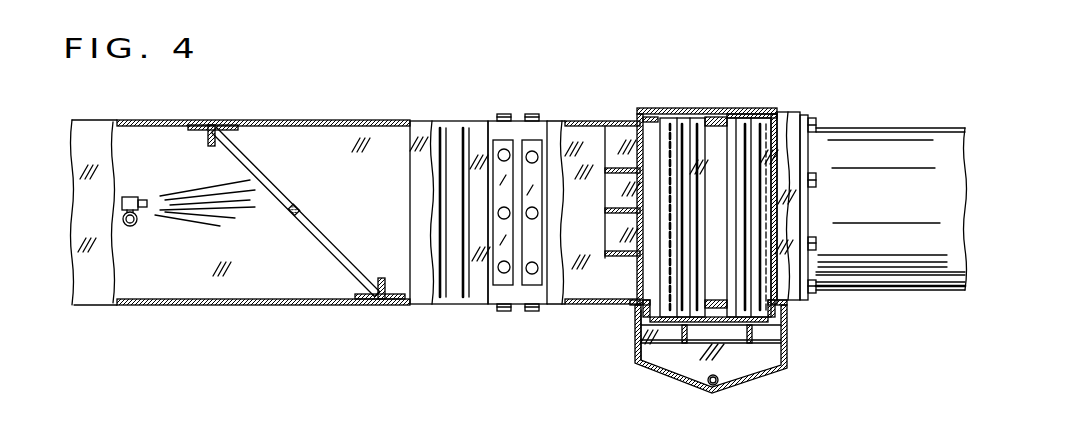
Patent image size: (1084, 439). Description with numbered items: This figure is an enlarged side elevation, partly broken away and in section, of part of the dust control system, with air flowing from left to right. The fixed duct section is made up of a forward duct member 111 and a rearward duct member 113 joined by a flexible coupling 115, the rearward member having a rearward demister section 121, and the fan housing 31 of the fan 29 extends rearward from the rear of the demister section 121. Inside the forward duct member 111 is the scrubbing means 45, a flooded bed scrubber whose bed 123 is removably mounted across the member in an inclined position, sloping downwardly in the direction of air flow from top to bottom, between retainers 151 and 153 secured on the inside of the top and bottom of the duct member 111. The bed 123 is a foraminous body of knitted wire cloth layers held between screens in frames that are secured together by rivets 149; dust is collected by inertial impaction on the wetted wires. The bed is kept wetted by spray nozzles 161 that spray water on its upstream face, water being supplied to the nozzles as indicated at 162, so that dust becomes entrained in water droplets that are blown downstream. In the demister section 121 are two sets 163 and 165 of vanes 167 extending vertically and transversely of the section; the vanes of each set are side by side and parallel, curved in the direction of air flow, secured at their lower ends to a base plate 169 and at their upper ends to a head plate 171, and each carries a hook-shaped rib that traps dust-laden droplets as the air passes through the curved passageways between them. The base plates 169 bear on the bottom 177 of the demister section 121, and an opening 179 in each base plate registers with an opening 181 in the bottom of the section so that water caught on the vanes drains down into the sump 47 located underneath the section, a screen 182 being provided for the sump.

The forward duct member 111 is at (241, 192).
The retainer 153 is at (187, 144).
The spray nozzle 161 is at (188, 192).
The water supply 162 is at (162, 244).
The scrubbing means 45 is at (310, 212).
The bed 123 is at (310, 212).
The retainer 151 is at (385, 316).
The flexible coupling 115 is at (527, 194).
The rearward duct member 113 is at (597, 182).
The first set of vanes 163 is at (593, 235).
The demister section 121 is at (708, 182).
The vanes 167 is at (763, 195).
The head plate 171 is at (779, 93).
The rivets 149 is at (854, 207).
The fan housing 31 is at (890, 173).
The second set of vanes 165 is at (876, 295).
The fan 29 is at (960, 243).
The base plate 169 is at (733, 329).
The opening 181 is at (709, 378).
The screen 182 is at (749, 350).
The sump 47 is at (726, 368).
The bottom 177 is at (611, 350).
The opening 179 is at (672, 399).